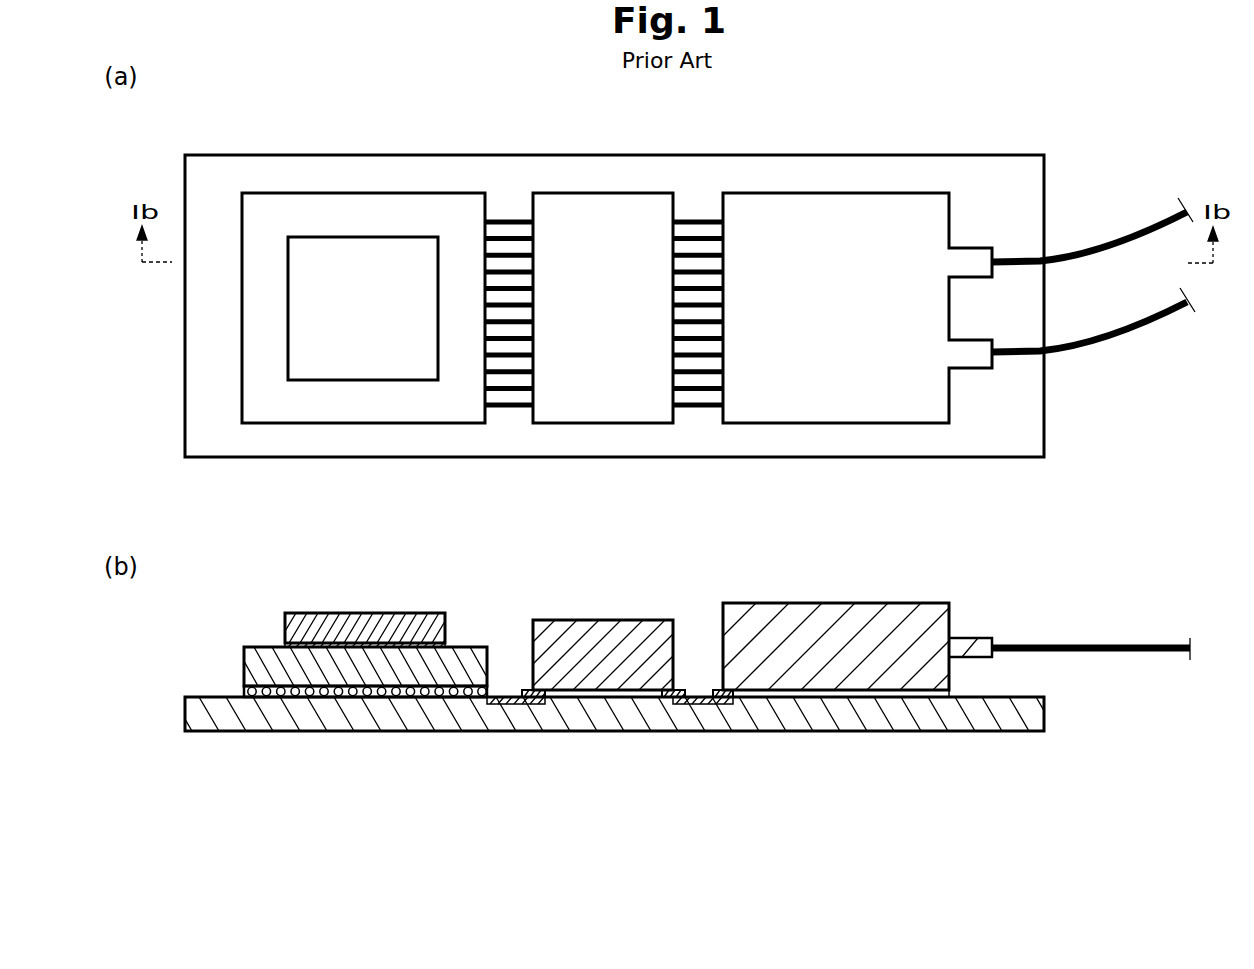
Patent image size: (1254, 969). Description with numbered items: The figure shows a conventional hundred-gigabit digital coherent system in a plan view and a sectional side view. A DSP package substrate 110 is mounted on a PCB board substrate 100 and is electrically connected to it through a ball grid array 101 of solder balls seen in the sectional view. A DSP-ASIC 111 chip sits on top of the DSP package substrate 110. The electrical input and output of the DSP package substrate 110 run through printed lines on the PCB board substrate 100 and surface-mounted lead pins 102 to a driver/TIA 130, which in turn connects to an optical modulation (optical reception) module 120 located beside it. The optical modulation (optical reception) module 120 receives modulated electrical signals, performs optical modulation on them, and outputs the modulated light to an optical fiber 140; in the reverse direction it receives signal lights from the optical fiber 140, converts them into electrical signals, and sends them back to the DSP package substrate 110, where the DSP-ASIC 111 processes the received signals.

The PCB board substrate 100 is at (503, 167).
The ball grid array 101 is at (244, 685).
The surface-mounted lead pins 102 is at (535, 700).
The DSP package substrate 110 is at (458, 425).
The DSP-ASIC 111 is at (350, 210).
The optical modulation (optical reception) module 120 is at (832, 205).
The driver/TIA 130 is at (612, 200).
The optical fiber 140 is at (1143, 232).